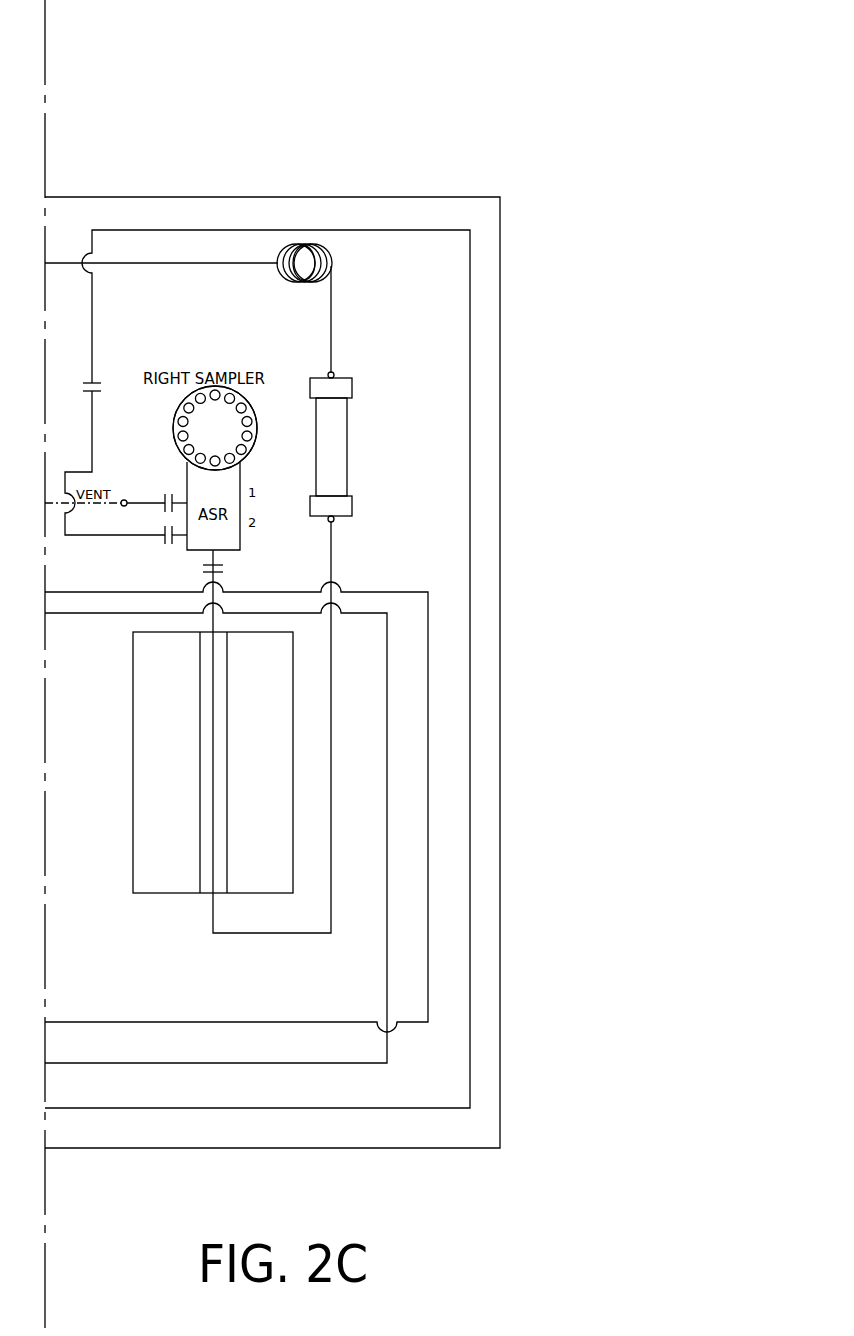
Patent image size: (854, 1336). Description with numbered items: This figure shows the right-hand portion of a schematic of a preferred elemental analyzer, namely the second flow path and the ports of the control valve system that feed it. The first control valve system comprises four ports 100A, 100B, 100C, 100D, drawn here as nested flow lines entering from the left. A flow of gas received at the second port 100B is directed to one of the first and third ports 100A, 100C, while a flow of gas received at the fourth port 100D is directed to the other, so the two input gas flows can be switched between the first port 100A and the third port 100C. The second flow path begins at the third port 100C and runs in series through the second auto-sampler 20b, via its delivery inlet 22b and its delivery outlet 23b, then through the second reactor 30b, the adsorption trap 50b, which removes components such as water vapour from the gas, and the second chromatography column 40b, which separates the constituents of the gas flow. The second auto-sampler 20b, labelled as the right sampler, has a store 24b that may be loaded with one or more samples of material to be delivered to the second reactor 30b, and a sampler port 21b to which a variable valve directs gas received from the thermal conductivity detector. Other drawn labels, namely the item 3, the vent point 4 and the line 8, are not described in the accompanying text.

The capacitor/valve 3 is at (94, 377).
The vent port 4 is at (92, 505).
The line 8 is at (152, 496).
The second auto-sampler 20b is at (174, 420).
The sampler port 21b is at (161, 507).
The delivery inlet 22b is at (161, 540).
The delivery outlet 23b is at (228, 553).
The store 24b is at (195, 437).
The second reactor 30b is at (133, 758).
The second chromatography column 40b is at (293, 284).
The adsorption trap 50b is at (352, 386).
The first port 100A is at (100, 1022).
The second port 100B is at (165, 1063).
The third port 100C is at (178, 1110).
The fourth port 100D is at (105, 1150).